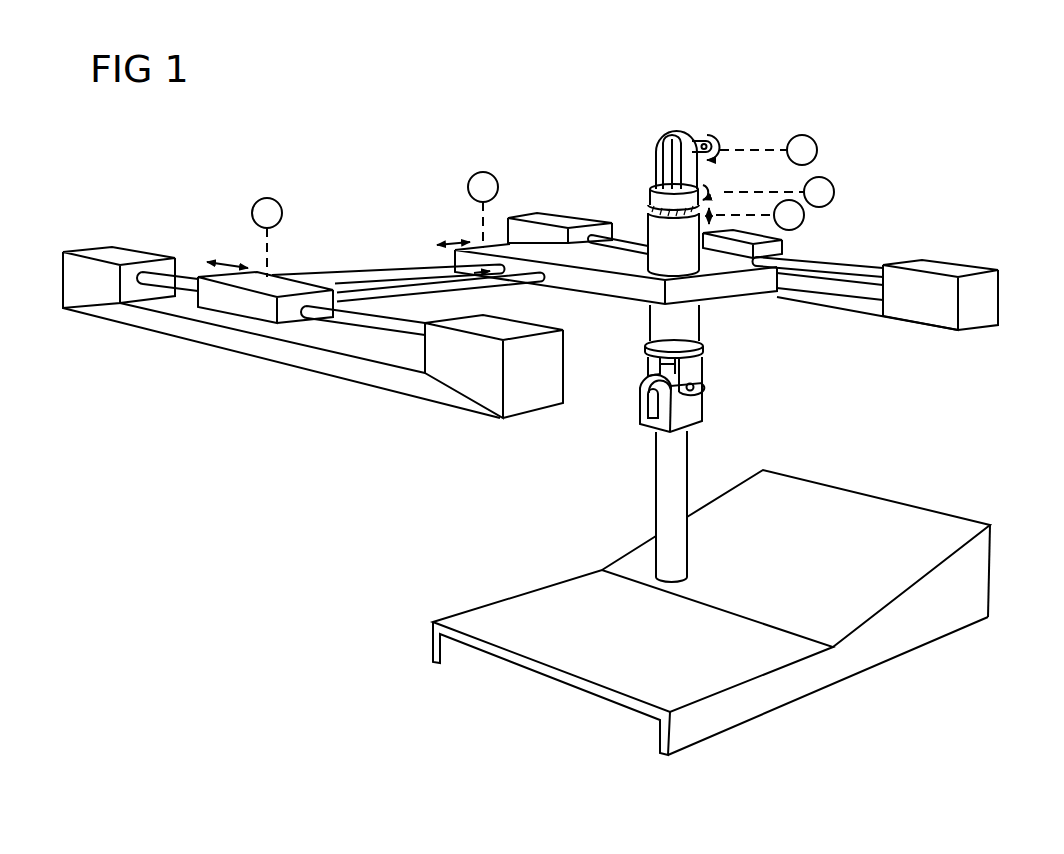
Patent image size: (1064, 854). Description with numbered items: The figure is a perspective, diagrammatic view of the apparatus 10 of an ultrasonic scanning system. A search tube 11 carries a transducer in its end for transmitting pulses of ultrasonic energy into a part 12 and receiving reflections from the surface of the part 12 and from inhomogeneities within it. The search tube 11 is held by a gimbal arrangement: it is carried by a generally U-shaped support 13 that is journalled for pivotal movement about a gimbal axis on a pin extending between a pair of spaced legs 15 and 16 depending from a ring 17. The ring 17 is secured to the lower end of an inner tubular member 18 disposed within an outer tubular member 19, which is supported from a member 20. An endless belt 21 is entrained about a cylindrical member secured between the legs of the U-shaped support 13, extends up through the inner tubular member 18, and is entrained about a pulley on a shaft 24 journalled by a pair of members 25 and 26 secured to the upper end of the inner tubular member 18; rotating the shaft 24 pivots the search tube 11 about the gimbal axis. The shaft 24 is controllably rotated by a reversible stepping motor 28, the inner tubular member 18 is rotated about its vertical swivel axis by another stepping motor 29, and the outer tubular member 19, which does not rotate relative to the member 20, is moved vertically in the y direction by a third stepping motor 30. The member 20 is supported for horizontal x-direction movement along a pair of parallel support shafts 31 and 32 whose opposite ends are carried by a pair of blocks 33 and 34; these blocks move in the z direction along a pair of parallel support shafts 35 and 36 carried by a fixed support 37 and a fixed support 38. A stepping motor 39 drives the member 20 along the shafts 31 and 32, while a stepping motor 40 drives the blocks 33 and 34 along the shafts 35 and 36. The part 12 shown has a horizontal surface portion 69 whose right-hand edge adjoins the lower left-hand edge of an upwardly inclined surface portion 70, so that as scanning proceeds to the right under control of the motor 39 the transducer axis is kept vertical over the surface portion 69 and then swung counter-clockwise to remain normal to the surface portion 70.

The apparatus 10 is at (900, 82).
The search tube 11 is at (684, 452).
The part 12 is at (713, 611).
The U-shaped support 13 is at (698, 408).
The leg 15 is at (647, 367).
The leg 16 is at (700, 371).
The ring 17 is at (704, 348).
The inner tubular member 18 is at (651, 186).
The outer tubular member 19 is at (651, 206).
The member 20 is at (610, 293).
The endless belt 21 is at (652, 392).
The shaft 24 is at (702, 140).
The member 25 is at (656, 148).
The member 26 is at (694, 172).
The reversible stepping motor 28 is at (817, 150).
The stepping motor 29 is at (834, 192).
The stepping motor 30 is at (804, 216).
The support shaft 31 is at (383, 278).
The support shaft 32 is at (433, 288).
The block 33 is at (255, 308).
The block 34 is at (779, 248).
The support shaft 35 is at (367, 320).
The support shaft 36 is at (848, 268).
The fixed support 37 is at (173, 328).
The fixed support 38 is at (989, 308).
The stepping motor 39 is at (498, 187).
The stepping motor 40 is at (282, 212).
The horizontal surface portion 69 is at (763, 665).
The upwardly inclined surface portion 70 is at (862, 613).